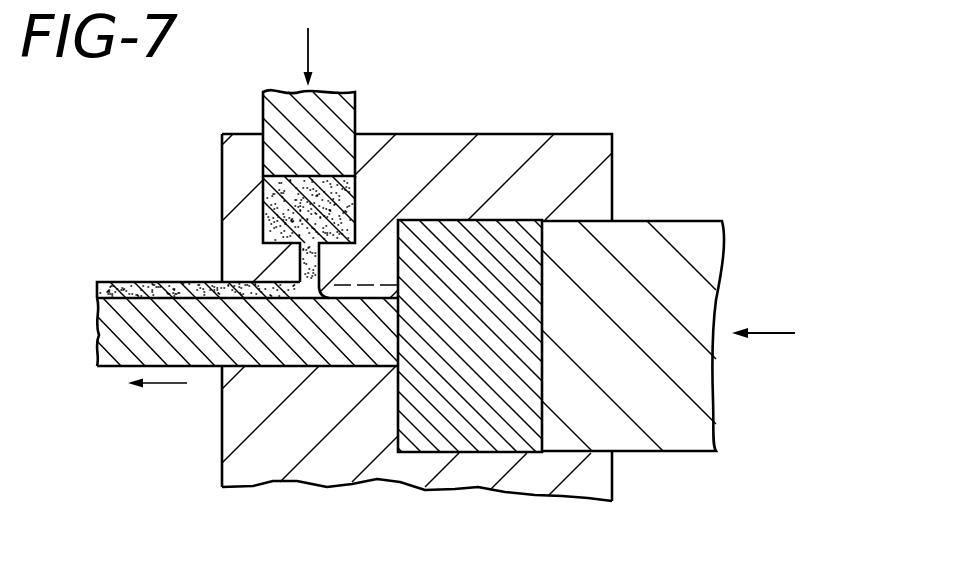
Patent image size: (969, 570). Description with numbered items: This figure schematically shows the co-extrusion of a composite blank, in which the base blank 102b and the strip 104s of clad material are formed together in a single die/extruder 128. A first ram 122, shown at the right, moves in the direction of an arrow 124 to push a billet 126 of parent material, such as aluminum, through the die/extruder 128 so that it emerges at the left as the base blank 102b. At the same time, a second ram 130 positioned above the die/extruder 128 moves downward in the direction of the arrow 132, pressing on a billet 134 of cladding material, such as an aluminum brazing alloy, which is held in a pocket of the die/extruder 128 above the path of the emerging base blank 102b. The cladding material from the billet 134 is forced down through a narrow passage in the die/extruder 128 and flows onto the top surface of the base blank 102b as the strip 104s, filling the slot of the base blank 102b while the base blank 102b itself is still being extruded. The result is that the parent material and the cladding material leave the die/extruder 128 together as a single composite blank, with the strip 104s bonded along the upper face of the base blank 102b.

The base blank 102b is at (107, 331).
The strip of clad material 104s is at (152, 282).
The first ram 122 is at (705, 253).
The arrow 124 is at (771, 333).
The billet of parent material 126 is at (517, 230).
The die/extruder 128 is at (488, 147).
The second ram 130 is at (351, 97).
The arrow 132 is at (308, 48).
The billet of cladding material 134 is at (277, 200).